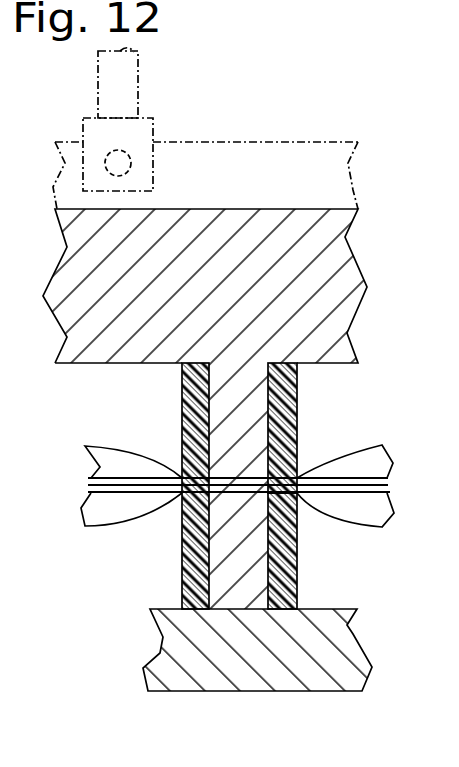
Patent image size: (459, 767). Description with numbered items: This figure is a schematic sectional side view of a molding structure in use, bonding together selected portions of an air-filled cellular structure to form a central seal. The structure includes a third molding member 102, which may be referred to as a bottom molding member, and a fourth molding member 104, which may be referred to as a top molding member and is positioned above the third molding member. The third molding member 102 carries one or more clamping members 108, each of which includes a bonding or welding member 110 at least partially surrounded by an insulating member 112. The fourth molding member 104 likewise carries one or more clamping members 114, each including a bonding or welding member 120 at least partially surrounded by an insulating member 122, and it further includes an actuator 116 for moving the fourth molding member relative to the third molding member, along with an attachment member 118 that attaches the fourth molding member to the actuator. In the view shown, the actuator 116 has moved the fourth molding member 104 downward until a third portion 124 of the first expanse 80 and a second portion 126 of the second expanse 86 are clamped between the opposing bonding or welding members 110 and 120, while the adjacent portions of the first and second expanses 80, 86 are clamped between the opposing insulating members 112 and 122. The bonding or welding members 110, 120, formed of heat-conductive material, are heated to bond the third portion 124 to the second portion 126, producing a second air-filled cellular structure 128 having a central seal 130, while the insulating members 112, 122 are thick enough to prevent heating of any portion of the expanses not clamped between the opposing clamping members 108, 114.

The first expanse 80 is at (107, 524).
The second expanse 86 is at (107, 448).
The third molding member 102 is at (131, 655).
The fourth molding member 104 is at (374, 231).
The clamping member 108 is at (233, 550).
The bonding or welding member 110 is at (273, 550).
The insulating member 112 is at (285, 582).
The clamping member 114 is at (306, 412).
The actuator 116 is at (92, 82).
The attachment member 118 is at (144, 107).
The bonding or welding member 120 is at (284, 390).
The insulating member 122 is at (193, 412).
The third portion 124 is at (233, 493).
The second portion 126 is at (257, 478).
The second air-filled cellular structure 128 is at (396, 448).
The central seal 130 is at (233, 478).